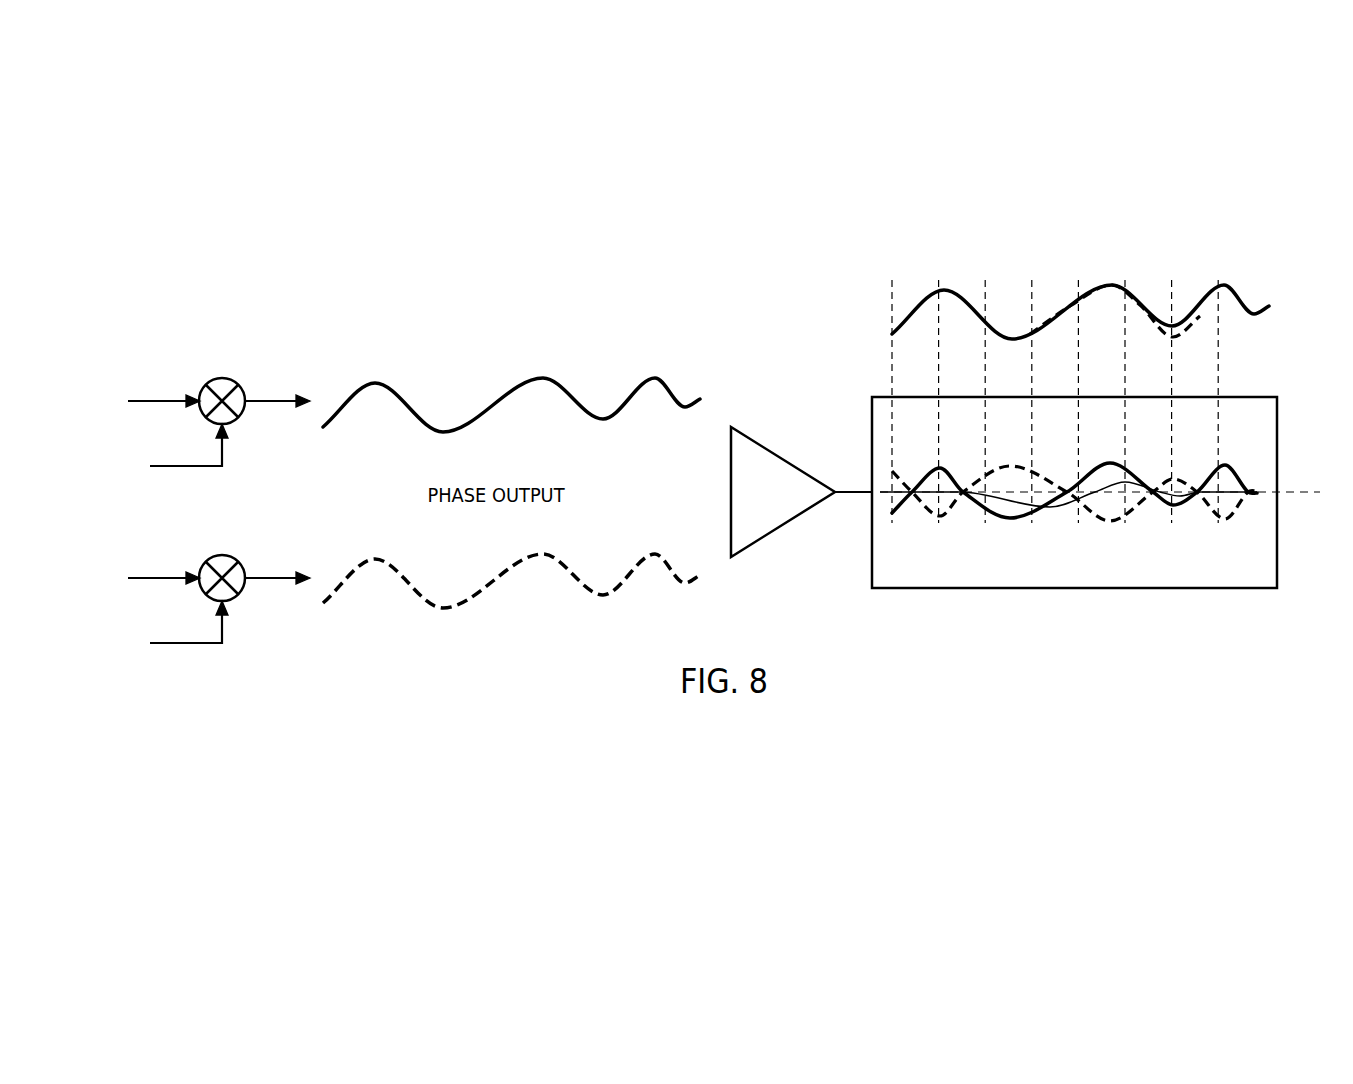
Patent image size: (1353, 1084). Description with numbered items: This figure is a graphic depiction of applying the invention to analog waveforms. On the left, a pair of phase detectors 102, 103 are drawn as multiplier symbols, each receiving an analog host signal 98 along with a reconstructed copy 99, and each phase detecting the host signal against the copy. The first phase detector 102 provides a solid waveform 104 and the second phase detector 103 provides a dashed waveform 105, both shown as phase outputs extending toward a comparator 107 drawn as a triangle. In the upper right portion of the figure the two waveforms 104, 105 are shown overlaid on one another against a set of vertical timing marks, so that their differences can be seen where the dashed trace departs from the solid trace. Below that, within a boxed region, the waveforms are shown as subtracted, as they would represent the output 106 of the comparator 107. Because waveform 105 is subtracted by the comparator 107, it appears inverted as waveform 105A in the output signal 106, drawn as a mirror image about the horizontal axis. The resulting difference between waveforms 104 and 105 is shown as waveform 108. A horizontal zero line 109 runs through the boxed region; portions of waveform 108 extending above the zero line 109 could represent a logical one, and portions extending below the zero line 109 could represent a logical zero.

The analog host signal 98 is at (163, 402).
The reconstructed copy 99 is at (163, 579).
The phase detector 102 is at (223, 377).
The phase detector 103 is at (223, 555).
The waveform 104 is at (512, 393).
The waveform 105 is at (512, 572).
The inverted waveform 105A is at (1008, 468).
The output 106 is at (845, 490).
The comparator 107 is at (785, 525).
The waveform 108 is at (1090, 503).
The zero line 109 is at (1288, 493).